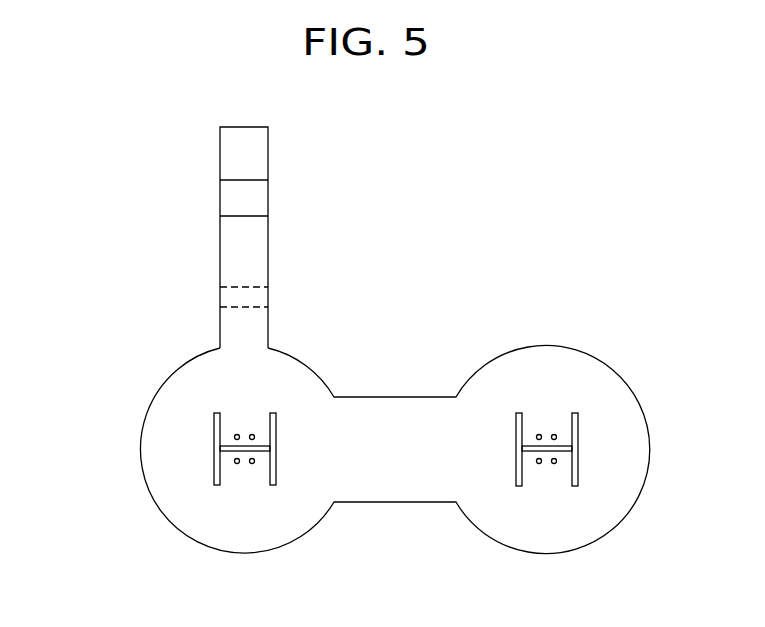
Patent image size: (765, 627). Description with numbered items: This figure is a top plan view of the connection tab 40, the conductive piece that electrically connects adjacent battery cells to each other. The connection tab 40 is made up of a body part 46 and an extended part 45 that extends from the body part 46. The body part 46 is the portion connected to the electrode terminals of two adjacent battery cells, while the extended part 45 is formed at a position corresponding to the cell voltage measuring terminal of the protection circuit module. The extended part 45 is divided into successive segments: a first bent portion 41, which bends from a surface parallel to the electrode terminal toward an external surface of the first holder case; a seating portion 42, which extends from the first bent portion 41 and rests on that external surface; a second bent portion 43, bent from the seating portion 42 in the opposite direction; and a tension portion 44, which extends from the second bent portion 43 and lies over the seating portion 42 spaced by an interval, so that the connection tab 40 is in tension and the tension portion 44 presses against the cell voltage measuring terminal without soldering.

The connection tab 40 is at (108, 230).
The first bent portion 41 is at (227, 295).
The seating portion 42 is at (227, 248).
The second bent portion 43 is at (227, 195).
The tension portion 44 is at (227, 150).
The extended part 45 is at (145, 157).
The body part 46 is at (166, 397).